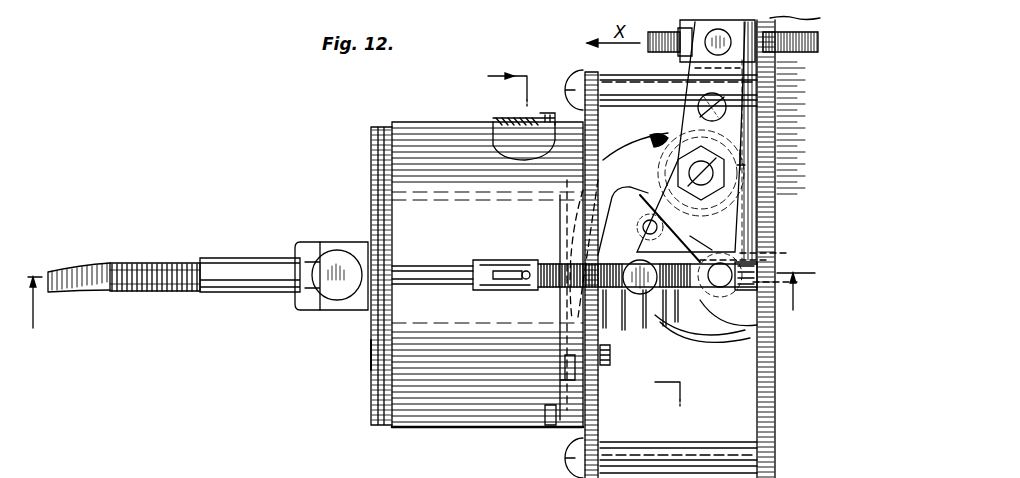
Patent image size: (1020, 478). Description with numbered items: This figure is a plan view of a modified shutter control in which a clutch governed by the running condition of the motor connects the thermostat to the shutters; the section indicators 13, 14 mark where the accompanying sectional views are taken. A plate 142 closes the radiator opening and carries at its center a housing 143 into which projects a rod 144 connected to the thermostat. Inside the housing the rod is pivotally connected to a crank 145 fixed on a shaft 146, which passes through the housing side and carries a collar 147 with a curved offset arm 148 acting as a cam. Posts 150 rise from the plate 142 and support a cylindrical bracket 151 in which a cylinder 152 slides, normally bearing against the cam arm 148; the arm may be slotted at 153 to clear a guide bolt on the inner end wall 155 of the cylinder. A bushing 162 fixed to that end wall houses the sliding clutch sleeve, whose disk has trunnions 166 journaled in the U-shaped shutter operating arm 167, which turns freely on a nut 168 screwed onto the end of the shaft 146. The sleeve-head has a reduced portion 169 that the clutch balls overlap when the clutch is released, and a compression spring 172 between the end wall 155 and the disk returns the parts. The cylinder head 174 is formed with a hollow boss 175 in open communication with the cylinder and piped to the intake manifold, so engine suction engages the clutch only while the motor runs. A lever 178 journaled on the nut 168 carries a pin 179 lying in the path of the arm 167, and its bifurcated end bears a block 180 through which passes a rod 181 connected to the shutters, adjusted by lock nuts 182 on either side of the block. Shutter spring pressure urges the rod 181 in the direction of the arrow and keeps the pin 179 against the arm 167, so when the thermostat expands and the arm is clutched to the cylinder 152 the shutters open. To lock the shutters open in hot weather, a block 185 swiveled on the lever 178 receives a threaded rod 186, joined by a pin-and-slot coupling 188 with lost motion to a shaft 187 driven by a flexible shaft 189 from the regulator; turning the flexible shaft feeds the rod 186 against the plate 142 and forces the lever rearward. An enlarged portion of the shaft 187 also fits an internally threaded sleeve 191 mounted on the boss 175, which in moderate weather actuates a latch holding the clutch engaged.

The section line 13 is at (426, 300).
The section line 14 is at (507, 79).
The plate 142 is at (769, 386).
The housing 143 is at (685, 340).
The rod 144 is at (776, 273).
The crank 145 is at (761, 250).
The shaft 146 is at (736, 174).
The collar 147 is at (664, 134).
The curved offset arm 148 is at (607, 355).
The posts 150 is at (655, 82).
The cylindrical bracket 151 is at (444, 428).
The cylinder 152 is at (385, 385).
The slot 153 is at (446, 126).
The inner end wall 155 is at (560, 310).
The bushing 162 is at (646, 303).
The trunnions 166 is at (730, 335).
The shutter operating arm 167 is at (740, 318).
The nut 168 is at (728, 153).
The reduced portion 169 is at (550, 458).
The compression spring 172 is at (650, 393).
The cylinder head 174 is at (372, 356).
The hollow extension or boss 175 is at (305, 308).
The lever 178 is at (677, 241).
The pin 179 is at (703, 237).
The block 180 is at (696, 141).
The rod 181 is at (649, 32).
The lock nuts 182 is at (752, 21).
The block 185 is at (620, 274).
The rod 186 is at (555, 262).
The shaft 187 is at (440, 255).
The pin-and-slot coupling 188 is at (520, 268).
The flexible shaft 189 is at (93, 264).
The internally threaded sleeve 191 is at (268, 258).